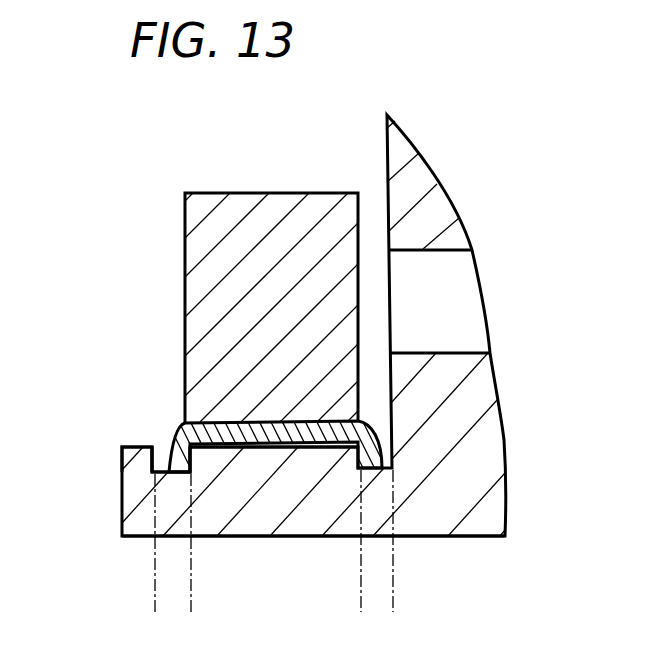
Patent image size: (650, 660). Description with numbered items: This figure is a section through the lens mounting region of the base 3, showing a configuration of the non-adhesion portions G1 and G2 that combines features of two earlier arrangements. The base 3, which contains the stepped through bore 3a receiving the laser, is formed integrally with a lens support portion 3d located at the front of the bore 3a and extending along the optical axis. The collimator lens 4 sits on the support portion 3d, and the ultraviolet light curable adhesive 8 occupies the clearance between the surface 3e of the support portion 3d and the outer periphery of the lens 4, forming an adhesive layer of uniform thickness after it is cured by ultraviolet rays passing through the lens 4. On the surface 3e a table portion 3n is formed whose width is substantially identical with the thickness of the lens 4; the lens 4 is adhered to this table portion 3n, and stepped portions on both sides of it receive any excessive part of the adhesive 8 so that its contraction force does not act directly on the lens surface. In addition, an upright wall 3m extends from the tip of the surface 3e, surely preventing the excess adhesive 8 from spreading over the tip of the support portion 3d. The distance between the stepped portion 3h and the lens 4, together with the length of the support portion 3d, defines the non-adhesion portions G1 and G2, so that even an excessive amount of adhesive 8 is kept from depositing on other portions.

The base 3 is at (508, 440).
The stepped through bore 3a is at (452, 330).
The stepped portion 3h is at (387, 160).
The lens support portion 3d is at (264, 505).
The upright wall 3m is at (124, 465).
The surface of the lens support portion 3e is at (165, 472).
The table portion 3n is at (265, 457).
The collimator lens 4 is at (267, 217).
The adhesive 8 is at (287, 418).
The non-adhesion portion G1 is at (437, 597).
The non-adhesion portion G2 is at (225, 600).